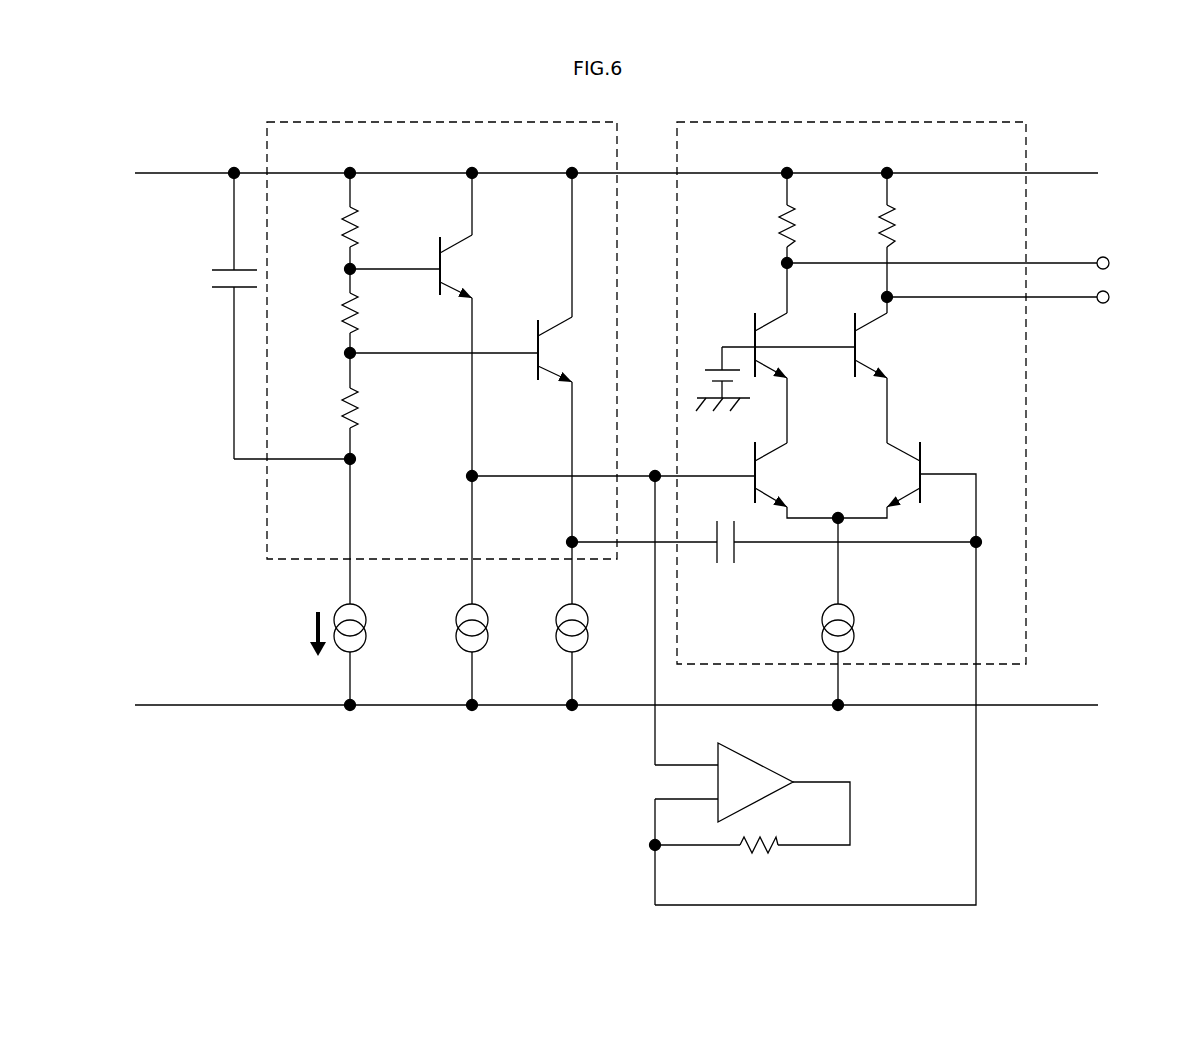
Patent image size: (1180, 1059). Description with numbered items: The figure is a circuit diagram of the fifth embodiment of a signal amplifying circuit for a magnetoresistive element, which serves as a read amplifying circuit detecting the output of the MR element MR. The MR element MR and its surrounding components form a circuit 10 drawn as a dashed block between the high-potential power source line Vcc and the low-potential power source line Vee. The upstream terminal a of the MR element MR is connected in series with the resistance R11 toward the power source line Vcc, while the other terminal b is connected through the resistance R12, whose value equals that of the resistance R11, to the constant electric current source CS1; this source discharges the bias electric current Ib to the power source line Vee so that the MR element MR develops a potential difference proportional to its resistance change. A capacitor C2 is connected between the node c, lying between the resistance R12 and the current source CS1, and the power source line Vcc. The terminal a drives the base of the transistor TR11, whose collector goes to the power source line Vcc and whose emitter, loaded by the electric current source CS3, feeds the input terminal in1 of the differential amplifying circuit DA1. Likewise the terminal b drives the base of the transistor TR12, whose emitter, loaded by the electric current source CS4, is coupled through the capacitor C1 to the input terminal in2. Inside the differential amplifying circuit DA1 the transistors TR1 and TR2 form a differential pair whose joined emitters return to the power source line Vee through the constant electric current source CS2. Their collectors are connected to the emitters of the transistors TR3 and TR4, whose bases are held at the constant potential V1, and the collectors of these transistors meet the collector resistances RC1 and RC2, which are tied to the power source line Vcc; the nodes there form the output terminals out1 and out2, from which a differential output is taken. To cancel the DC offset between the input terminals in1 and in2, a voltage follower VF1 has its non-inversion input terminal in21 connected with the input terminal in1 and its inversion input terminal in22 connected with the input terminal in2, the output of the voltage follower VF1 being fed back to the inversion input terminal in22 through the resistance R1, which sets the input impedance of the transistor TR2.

The circuit 10 is at (583, 125).
The differential amplifying circuit DA1 is at (851, 379).
The power source line Vcc is at (586, 173).
The power source line Vee is at (586, 705).
The capacitor C2 is at (262, 314).
The resistance R11 is at (325, 219).
The magnetoresistive element MR is at (329, 311).
The resistance R12 is at (325, 406).
The terminal a is at (339, 269).
The terminal b is at (339, 353).
The node c is at (340, 448).
The constant electric current source CS1 is at (328, 585).
The bias electric current Ib is at (305, 634).
The transistor TR11 is at (414, 233).
The transistor TR12 is at (464, 275).
The electric current source CS3 is at (536, 504).
The electric current source CS4 is at (550, 546).
The capacitor C1 is at (777, 556).
The collector resistance RC1 is at (759, 241).
The collector resistance RC2 is at (911, 241).
The output terminal out1 is at (975, 263).
The output terminal out2 is at (1025, 297).
The transistor TR3 is at (788, 365).
The transistor TR4 is at (893, 374).
The constant potential V1 is at (723, 364).
The transistor TR1 is at (749, 483).
The transistor TR2 is at (907, 492).
The input terminal in1 is at (724, 462).
The input terminal in2 is at (944, 459).
The constant electric current source CS2 is at (863, 614).
The voltage follower VF1 is at (752, 660).
The non-inversion input terminal in21 is at (628, 764).
The inversion input terminal in22 is at (628, 798).
The resistance R1 is at (813, 723).